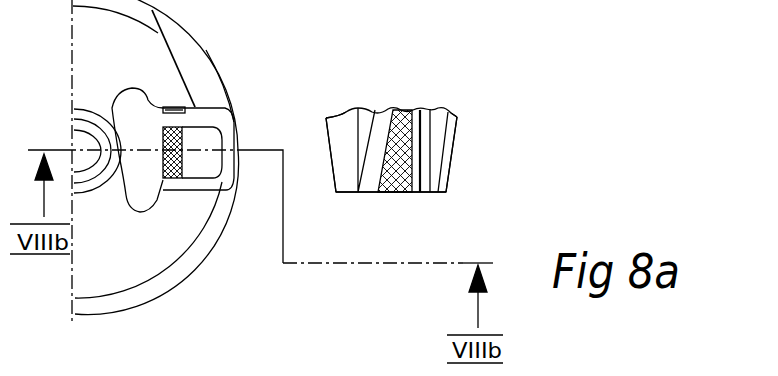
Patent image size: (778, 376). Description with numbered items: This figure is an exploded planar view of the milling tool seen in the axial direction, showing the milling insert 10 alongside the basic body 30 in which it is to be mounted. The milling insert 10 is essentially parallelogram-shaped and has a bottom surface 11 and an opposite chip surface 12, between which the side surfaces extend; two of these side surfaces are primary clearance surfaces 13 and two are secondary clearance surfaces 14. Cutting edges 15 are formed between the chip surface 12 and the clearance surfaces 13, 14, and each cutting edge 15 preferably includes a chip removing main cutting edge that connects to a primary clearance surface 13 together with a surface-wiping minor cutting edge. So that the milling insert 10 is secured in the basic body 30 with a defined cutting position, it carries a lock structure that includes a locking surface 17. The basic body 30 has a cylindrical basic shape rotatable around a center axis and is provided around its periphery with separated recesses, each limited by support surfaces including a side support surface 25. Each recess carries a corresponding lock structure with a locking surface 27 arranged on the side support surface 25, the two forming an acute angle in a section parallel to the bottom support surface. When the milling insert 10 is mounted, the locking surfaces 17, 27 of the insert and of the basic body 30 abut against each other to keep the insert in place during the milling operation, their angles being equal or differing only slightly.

The milling insert 10 is at (395, 151).
The bottom surface 11 is at (353, 194).
The chip surface 12 is at (395, 110).
The primary clearance surface 13 is at (329, 157).
The secondary clearance surface 14 is at (358, 137).
The cutting edge 15 is at (326, 117).
The locking surface 17 is at (401, 163).
The side support surface 25 is at (206, 145).
The locking surface 27 is at (176, 164).
The basic body 30 is at (172, 317).